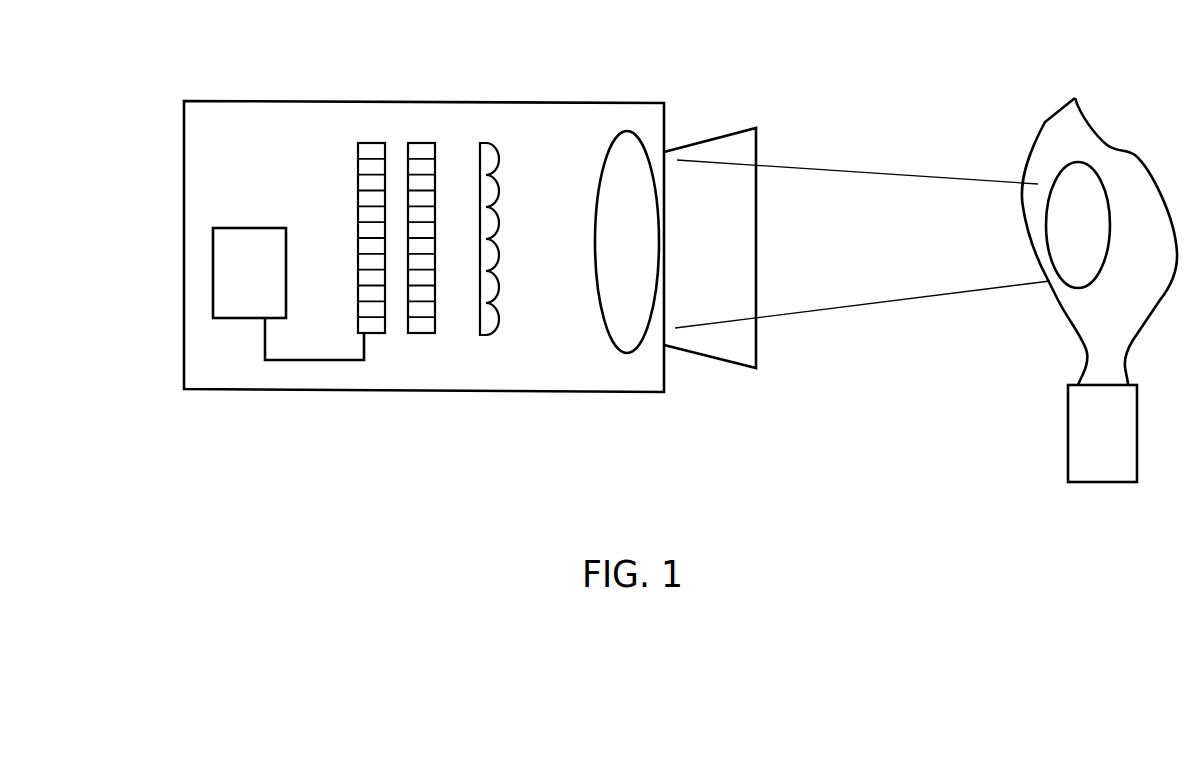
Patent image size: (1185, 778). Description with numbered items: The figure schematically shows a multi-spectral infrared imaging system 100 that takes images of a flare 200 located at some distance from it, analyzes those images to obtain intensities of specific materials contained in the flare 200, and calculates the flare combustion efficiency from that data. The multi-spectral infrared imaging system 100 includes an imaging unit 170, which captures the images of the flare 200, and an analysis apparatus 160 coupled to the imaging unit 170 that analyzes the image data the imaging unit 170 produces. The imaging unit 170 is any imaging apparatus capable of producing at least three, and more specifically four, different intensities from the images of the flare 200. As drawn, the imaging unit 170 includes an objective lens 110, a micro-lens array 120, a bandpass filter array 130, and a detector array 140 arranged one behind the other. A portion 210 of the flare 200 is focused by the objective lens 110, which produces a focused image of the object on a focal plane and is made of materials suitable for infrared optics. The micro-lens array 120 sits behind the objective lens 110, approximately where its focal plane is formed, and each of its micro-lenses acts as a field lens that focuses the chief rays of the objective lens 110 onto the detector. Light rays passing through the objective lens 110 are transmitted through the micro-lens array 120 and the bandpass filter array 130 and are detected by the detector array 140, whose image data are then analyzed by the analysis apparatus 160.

The multi-spectral infrared imaging system 100 is at (582, 103).
The objective lens 110 is at (623, 353).
The micro-lens array 120 is at (518, 305).
The bandpass filter array 130 is at (415, 333).
The detector array 140 is at (373, 333).
The analysis apparatus 160 is at (239, 318).
The imaging unit 170 is at (481, 339).
The flare 200 is at (1157, 178).
The portion of the flare 210 is at (1068, 197).